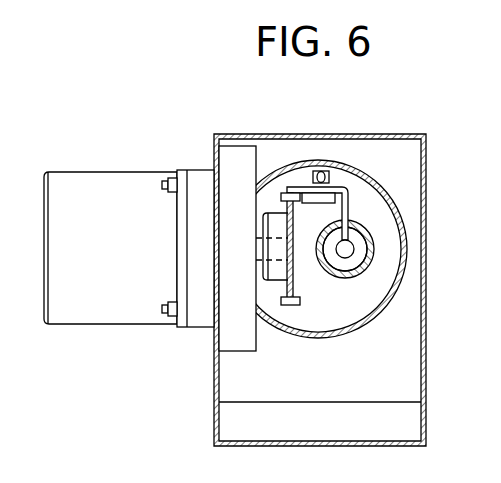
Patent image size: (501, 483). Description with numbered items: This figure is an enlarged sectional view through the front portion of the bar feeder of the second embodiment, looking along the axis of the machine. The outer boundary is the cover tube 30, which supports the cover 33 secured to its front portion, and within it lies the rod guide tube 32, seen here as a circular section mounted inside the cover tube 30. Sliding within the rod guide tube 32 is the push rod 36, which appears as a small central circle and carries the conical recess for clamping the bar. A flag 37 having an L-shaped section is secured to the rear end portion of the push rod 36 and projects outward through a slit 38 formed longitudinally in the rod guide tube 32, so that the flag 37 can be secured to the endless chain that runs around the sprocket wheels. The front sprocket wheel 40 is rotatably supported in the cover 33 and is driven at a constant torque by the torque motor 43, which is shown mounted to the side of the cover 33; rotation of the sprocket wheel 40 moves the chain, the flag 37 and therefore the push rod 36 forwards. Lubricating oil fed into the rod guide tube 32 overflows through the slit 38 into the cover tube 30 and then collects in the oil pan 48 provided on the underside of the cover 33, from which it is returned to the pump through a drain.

The cover tube 30 is at (395, 293).
The rod guide tube 32 is at (376, 242).
The cover 33 is at (407, 134).
The push rod 36 is at (348, 259).
The flag 37 is at (350, 202).
The slit 38 is at (350, 217).
The front sprocket wheel 40 is at (297, 288).
The torque motor 43 is at (105, 324).
The oil pan 48 is at (423, 413).